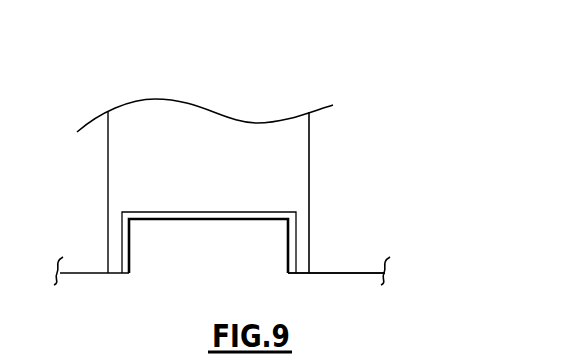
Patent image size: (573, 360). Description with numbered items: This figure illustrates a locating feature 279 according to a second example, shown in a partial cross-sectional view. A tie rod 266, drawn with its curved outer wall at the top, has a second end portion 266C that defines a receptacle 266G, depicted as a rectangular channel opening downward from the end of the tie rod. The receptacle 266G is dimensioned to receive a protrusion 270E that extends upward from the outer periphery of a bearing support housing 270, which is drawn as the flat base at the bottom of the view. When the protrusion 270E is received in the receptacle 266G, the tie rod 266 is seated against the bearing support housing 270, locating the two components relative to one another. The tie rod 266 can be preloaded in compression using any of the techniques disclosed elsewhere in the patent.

The locating feature 279 is at (375, 72).
The tie rod 266 is at (137, 100).
The second end portion 266C is at (300, 149).
The receptacle 266G is at (182, 212).
The protrusion 270E is at (267, 238).
The bearing support housing 270 is at (346, 271).